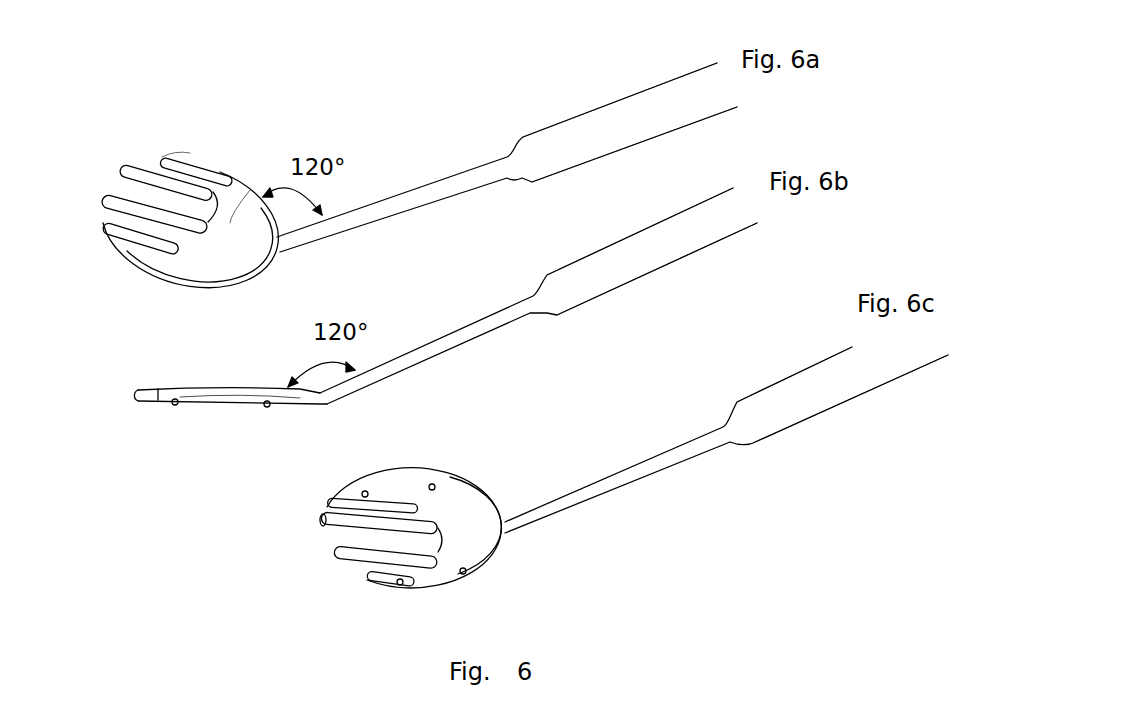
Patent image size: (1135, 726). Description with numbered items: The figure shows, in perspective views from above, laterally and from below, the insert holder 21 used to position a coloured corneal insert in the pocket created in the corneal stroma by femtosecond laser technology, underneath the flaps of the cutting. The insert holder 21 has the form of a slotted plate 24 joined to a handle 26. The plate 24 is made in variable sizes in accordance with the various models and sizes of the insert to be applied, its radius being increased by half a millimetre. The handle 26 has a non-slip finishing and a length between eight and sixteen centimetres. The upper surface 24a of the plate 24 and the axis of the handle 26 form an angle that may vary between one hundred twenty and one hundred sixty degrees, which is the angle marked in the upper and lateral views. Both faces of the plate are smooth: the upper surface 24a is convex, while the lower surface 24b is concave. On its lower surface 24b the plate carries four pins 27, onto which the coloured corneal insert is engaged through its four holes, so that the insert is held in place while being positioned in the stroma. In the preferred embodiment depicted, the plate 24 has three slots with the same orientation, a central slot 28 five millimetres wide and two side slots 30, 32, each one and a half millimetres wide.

In FIG. 6A, the insert holder 21 is at (355, 203).
In FIG. 6B, the insert holder 21 is at (393, 357).
In FIG. 6C, the insert holder 21 is at (527, 505).
In FIG. 6A, the slotted plate 24 is at (150, 275).
In FIG. 6C, the slotted plate 24 is at (414, 528).
In FIG. 6A, the upper surface of the plate 24a is at (230, 223).
In FIG. 6B, the upper surface of the plate 24a is at (212, 381).
In FIG. 6B, the lower surface of the plate 24b is at (155, 403).
In FIG. 6A, the handle 26 is at (605, 130).
In FIG. 6B, the handle 26 is at (667, 250).
In FIG. 6C, the handle 26 is at (812, 402).
In FIG. 6B, the pins 27 is at (180, 407).
In FIG. 6C, the pins 27 is at (365, 495).
In FIG. 6A, the central slot 28 is at (128, 193).
In FIG. 6C, the central slot 28 is at (337, 543).
In FIG. 6A, the side slot 30 is at (107, 212).
In FIG. 6A, the side slot 32 is at (153, 163).